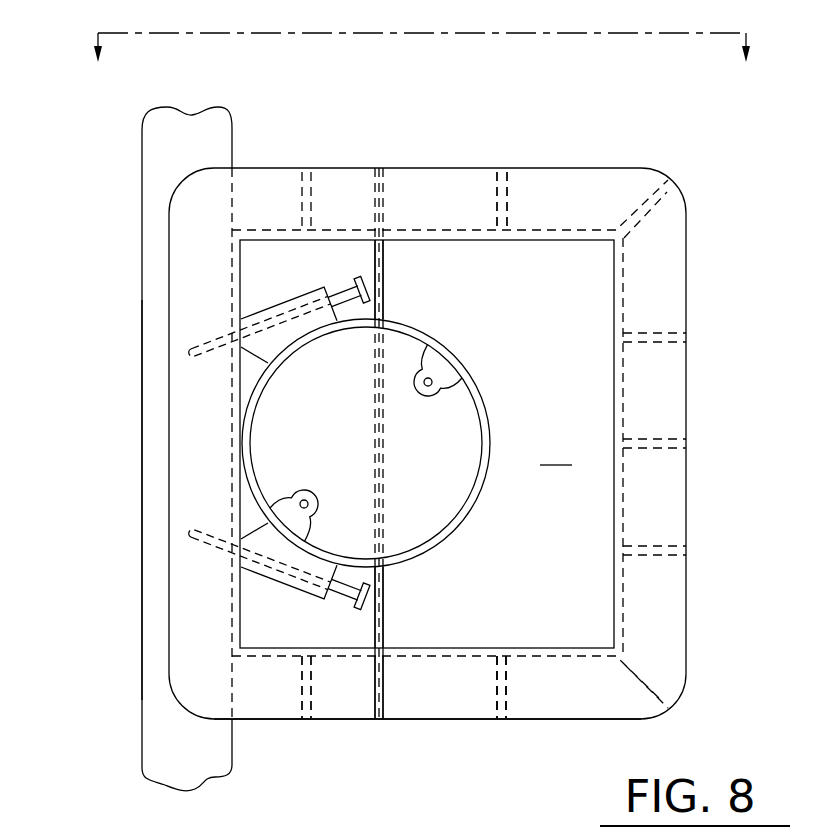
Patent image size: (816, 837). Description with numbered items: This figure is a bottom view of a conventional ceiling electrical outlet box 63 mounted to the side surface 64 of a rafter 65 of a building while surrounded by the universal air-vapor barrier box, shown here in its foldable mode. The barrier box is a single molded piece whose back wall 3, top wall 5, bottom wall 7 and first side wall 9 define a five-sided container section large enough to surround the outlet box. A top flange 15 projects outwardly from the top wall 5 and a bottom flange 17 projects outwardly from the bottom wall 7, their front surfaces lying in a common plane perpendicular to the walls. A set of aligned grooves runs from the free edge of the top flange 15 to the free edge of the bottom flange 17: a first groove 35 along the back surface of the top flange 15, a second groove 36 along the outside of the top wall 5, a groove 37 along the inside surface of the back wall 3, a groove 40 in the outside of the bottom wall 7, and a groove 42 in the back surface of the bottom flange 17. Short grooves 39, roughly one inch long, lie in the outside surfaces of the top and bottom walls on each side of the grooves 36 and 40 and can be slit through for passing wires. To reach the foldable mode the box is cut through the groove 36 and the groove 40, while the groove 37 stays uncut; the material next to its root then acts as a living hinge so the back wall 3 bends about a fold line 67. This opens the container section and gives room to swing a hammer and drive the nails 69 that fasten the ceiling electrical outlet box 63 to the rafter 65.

The first side wall 9 is at (422, 34).
The side surface 64 is at (232, 147).
The rafter 65 is at (136, 496).
The top flange 15 is at (576, 193).
The top wall 5 is at (577, 241).
The back wall 3 is at (556, 452).
The first groove 35 is at (378, 230).
The second groove 36 is at (377, 230).
The groove 37 is at (383, 628).
The fold line 67 is at (378, 302).
The short grooves 39 is at (485, 233).
The bottom wall 7 is at (497, 650).
The bottom flange 17 is at (337, 697).
The groove 40 is at (366, 668).
The groove 42 is at (427, 657).
The ceiling electrical outlet box 63 is at (472, 524).
The nails 69 is at (345, 288).